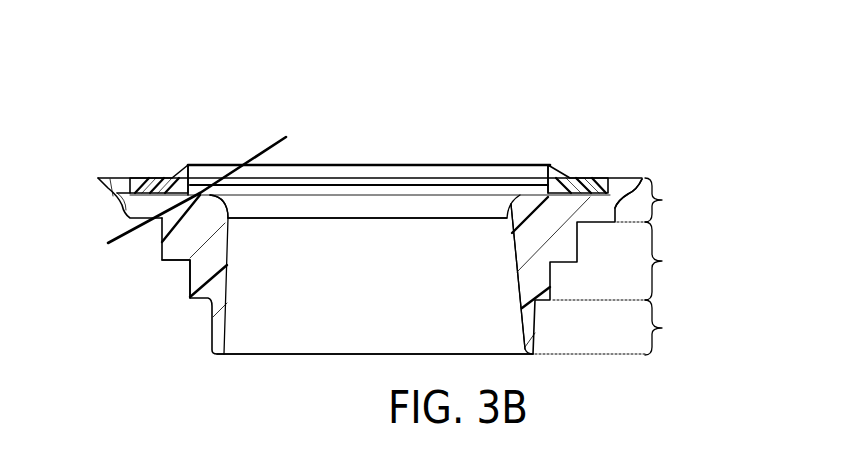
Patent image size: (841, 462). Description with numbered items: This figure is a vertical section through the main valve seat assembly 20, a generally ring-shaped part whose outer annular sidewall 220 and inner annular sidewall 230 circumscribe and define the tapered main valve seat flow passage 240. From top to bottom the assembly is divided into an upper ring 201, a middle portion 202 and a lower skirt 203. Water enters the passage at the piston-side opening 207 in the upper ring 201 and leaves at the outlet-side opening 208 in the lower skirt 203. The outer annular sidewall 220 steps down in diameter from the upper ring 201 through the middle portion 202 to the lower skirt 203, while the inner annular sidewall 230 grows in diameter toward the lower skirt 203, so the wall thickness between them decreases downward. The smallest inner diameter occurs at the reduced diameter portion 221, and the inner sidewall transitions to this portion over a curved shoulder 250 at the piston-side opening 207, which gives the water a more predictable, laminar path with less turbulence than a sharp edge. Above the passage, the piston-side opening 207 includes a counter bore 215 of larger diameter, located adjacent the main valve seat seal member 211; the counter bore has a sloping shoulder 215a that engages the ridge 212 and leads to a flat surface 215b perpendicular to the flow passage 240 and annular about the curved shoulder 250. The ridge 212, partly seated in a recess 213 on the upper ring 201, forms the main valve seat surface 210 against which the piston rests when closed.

The main valve seat assembly 20 is at (422, 86).
The upper ring 201 is at (661, 200).
The middle portion 202 is at (629, 261).
The lower skirt 203 is at (620, 327).
The piston-side opening 207 is at (233, 165).
The outlet-side opening 208 is at (370, 352).
The main valve seat surface 210 is at (563, 171).
The main valve seat seal member 211 is at (600, 178).
The ridge 212 is at (176, 172).
The recess 213 is at (122, 213).
The counter bore 215 is at (530, 177).
The shoulder 215a is at (128, 226).
The flat surface 215b is at (265, 156).
The outer annular sidewall 220 is at (190, 276).
The reduced diameter portion 221 is at (372, 218).
The inner annular sidewall 230 is at (510, 262).
The main valve seat flow passage 240 is at (390, 294).
The curved shoulder 250 is at (240, 200).